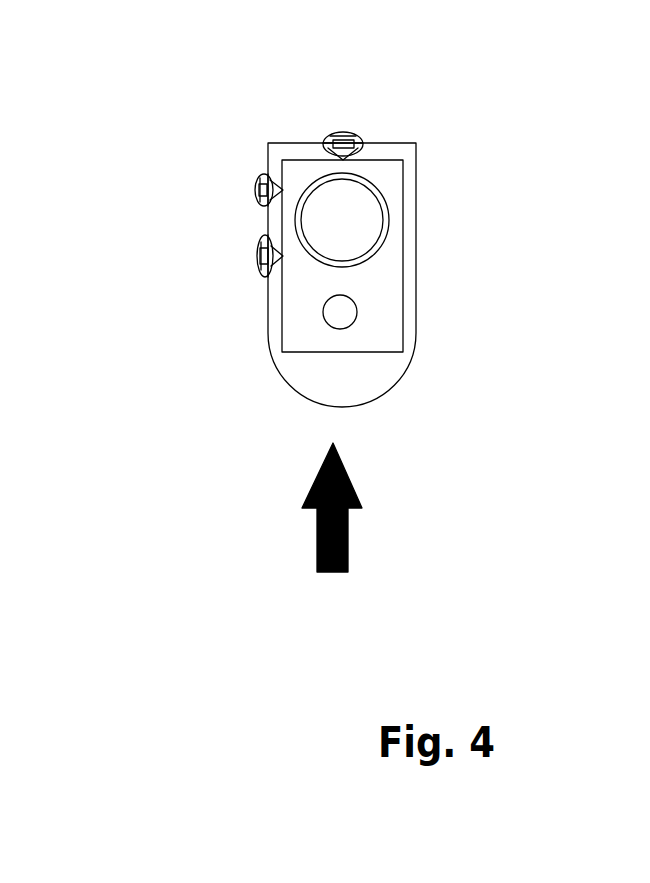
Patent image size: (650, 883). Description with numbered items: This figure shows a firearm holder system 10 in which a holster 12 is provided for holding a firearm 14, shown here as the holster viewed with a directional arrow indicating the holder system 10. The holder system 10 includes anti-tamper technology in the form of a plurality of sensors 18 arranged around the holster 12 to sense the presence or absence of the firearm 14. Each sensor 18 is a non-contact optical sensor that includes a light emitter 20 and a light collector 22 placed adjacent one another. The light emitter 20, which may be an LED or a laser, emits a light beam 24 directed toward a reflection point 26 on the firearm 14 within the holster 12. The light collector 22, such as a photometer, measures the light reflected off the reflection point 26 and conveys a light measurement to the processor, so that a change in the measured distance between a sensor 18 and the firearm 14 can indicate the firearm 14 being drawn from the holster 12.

The firearm holder system 10 is at (332, 529).
The holster 12 is at (416, 332).
The firearm 14 is at (403, 255).
The sensor 18 is at (267, 203).
The light emitter 20 is at (258, 193).
The light collector 22 is at (265, 180).
The light beam 24 is at (270, 177).
The reflection point 26 is at (268, 172).